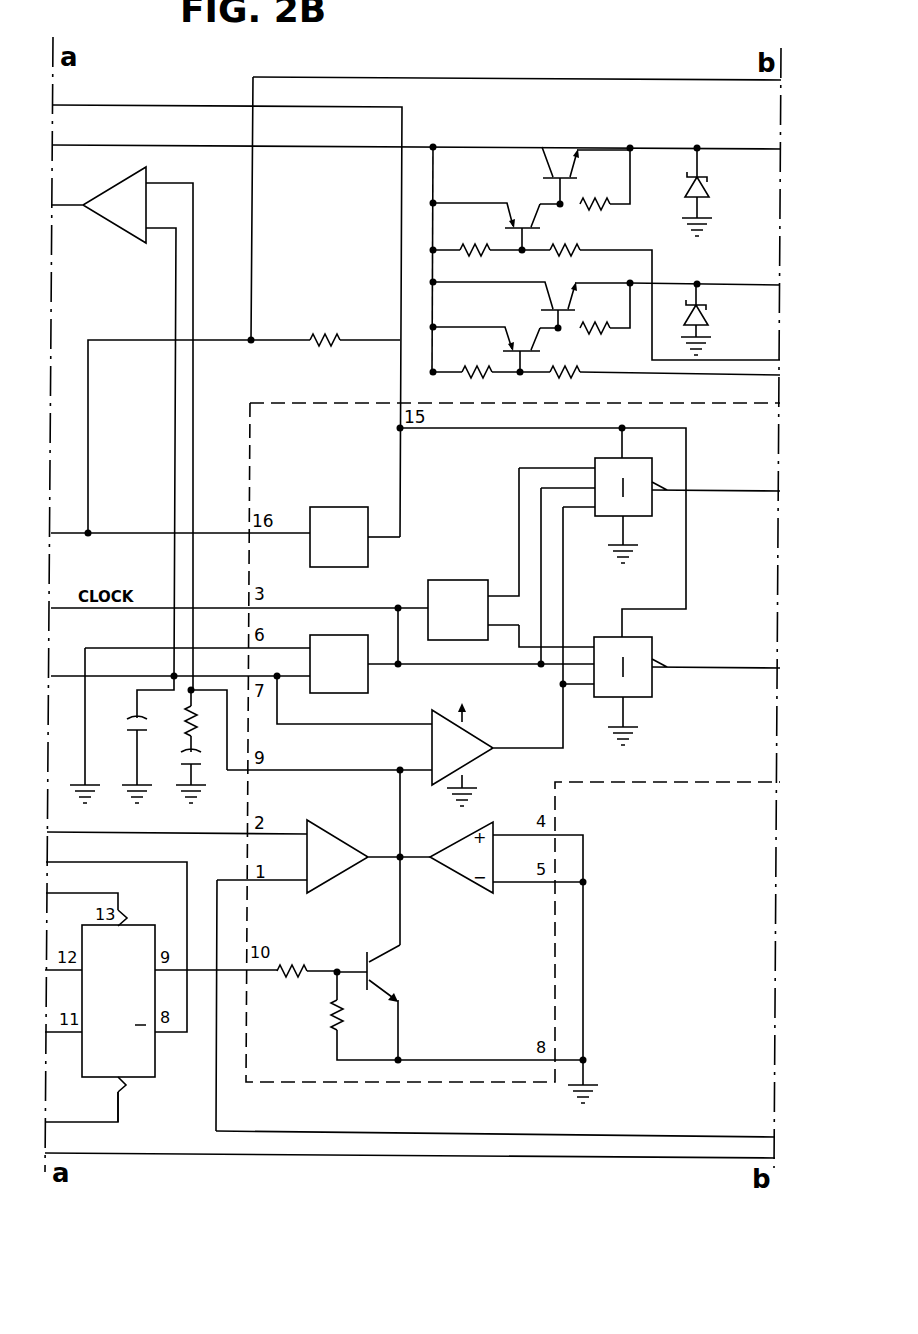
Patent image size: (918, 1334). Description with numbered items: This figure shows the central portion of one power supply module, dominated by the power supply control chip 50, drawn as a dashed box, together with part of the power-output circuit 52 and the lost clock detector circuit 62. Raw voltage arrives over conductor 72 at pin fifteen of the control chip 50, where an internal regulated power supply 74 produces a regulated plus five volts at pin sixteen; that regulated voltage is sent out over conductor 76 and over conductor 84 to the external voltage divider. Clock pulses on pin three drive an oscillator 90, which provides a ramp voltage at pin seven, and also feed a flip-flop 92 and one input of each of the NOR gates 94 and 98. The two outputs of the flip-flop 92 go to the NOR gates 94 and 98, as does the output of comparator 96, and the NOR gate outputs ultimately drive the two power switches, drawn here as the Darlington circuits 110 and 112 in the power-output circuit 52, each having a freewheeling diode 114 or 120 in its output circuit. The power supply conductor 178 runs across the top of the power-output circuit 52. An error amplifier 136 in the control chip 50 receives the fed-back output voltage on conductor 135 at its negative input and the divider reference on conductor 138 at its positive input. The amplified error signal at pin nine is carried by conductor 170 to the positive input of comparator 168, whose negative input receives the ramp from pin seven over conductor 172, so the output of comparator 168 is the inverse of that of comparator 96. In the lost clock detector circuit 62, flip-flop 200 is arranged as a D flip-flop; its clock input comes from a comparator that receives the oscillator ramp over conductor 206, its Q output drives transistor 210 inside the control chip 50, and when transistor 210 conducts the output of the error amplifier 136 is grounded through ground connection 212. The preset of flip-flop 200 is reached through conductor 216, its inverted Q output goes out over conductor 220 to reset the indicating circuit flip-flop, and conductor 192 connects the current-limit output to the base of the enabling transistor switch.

The power-output circuit 52 is at (617, 60).
The conductor 76 is at (602, 79).
The conductor 72 is at (175, 105).
The power supply conductor 178 is at (175, 145).
The comparator 168 is at (120, 190).
The conductor 170 is at (195, 302).
The conductor 172 is at (175, 300).
The conductor 84 is at (158, 533).
The regulated power supply 74 is at (335, 507).
The flip-flop 92 is at (465, 580).
The NOR gate 98 is at (597, 462).
The NOR gate 94 is at (608, 637).
The oscillator 90 is at (345, 686).
The comparator 96 is at (470, 742).
The power supply control chip 50 is at (730, 782).
The error amplifier 136 is at (338, 845).
The transistor 210 is at (363, 966).
The ground connection 212 is at (593, 1086).
The conductor 135 is at (702, 1137).
The conductor 192 is at (480, 1157).
The conductor 216 is at (88, 1124).
The lost clock detector circuit 62 is at (152, 1090).
The flip-flop 200 is at (150, 1060).
The conductor 138 is at (150, 832).
The conductor 220 is at (140, 862).
The conductor 206 is at (60, 674).
The Darlington circuit 112 is at (528, 180).
The Darlington circuit 110 is at (528, 307).
The freewheeling diode 120 is at (710, 192).
The freewheeling diode 114 is at (706, 318).